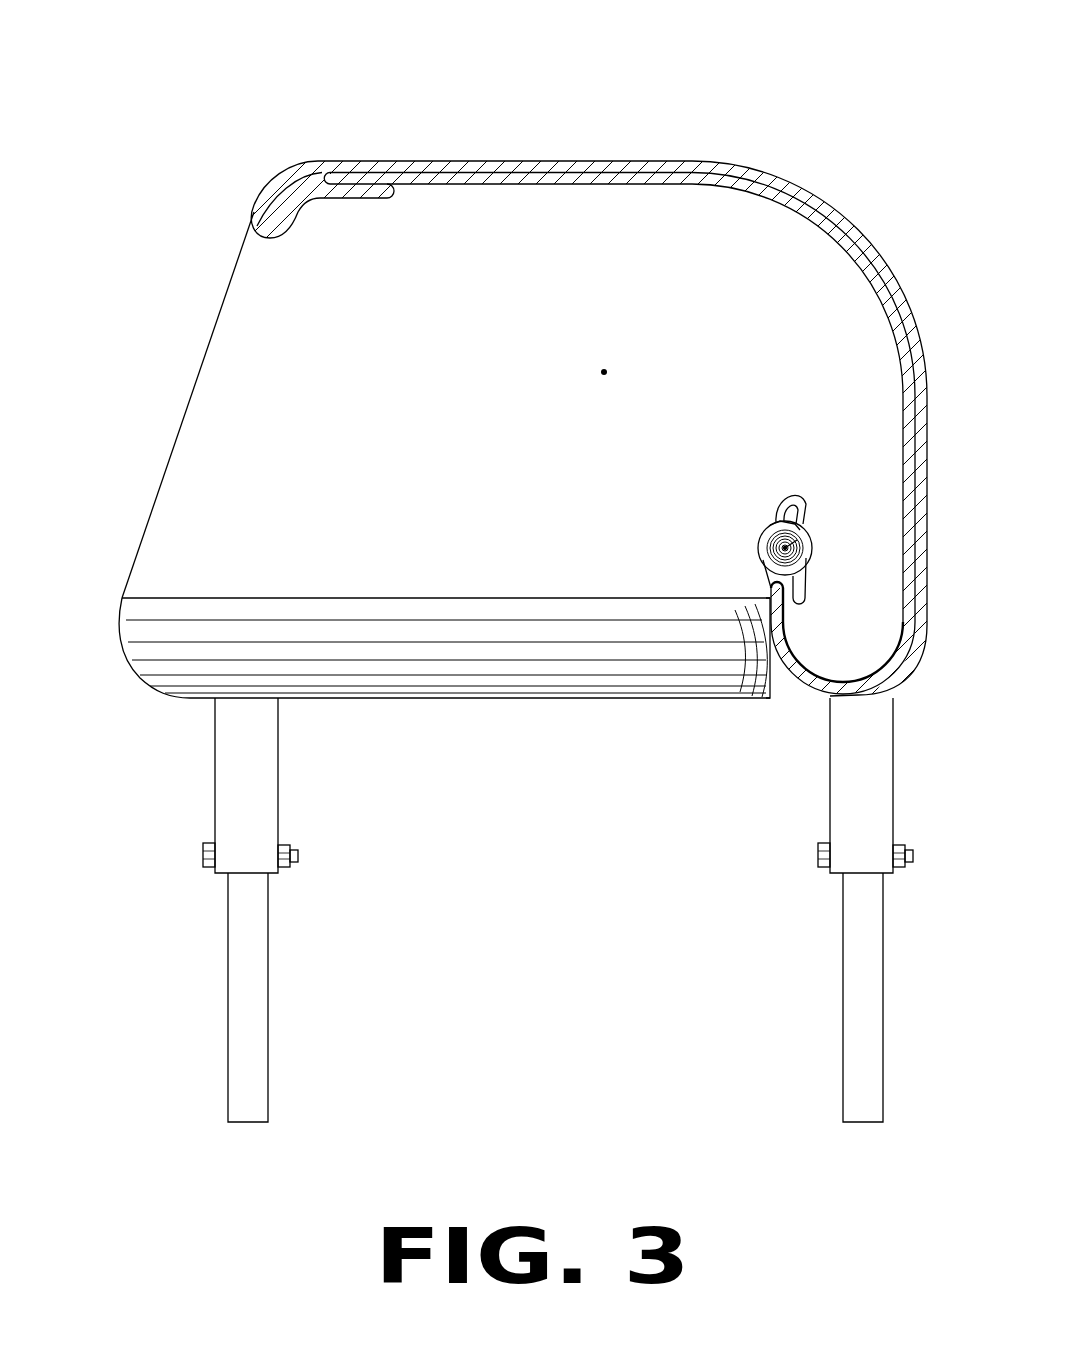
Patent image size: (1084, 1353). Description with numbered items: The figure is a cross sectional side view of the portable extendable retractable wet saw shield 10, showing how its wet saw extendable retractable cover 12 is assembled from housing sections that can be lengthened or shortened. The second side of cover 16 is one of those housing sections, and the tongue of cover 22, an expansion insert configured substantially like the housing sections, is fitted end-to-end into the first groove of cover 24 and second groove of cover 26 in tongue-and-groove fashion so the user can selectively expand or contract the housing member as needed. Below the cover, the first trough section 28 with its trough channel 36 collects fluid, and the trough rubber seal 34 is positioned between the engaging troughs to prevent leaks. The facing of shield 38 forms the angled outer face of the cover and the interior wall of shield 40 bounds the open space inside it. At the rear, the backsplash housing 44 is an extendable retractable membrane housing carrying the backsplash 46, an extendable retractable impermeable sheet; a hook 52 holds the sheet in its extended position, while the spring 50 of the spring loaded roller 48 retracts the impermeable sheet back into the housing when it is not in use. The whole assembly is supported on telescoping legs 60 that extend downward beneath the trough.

The portable extendable retractable wet saw shield 10 is at (200, 268).
The wet saw extendable retractable cover 12 is at (452, 130).
The second side of cover 16 is at (565, 163).
The tongue of cover 22 is at (553, 186).
The first groove of cover 24 is at (330, 198).
The second groove of cover 26 is at (766, 598).
The first trough section 28 is at (485, 597).
The trough rubber seal 34 is at (800, 655).
The trough channel 36 is at (825, 698).
The facing of shield 38 is at (188, 405).
The interior wall of shield 40 is at (603, 373).
The backsplash housing 44 is at (760, 535).
The backsplash 46 is at (805, 550).
The spring loaded roller 48 is at (770, 525).
The spring 50 is at (775, 553).
The hook 52 is at (791, 496).
The telescoping legs 60 is at (355, 1045).